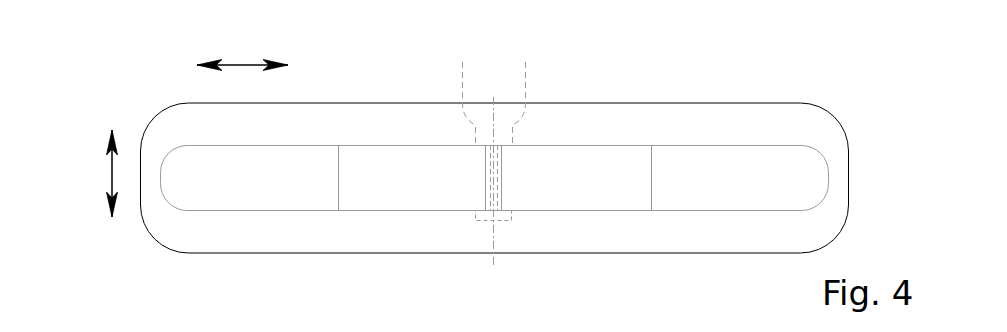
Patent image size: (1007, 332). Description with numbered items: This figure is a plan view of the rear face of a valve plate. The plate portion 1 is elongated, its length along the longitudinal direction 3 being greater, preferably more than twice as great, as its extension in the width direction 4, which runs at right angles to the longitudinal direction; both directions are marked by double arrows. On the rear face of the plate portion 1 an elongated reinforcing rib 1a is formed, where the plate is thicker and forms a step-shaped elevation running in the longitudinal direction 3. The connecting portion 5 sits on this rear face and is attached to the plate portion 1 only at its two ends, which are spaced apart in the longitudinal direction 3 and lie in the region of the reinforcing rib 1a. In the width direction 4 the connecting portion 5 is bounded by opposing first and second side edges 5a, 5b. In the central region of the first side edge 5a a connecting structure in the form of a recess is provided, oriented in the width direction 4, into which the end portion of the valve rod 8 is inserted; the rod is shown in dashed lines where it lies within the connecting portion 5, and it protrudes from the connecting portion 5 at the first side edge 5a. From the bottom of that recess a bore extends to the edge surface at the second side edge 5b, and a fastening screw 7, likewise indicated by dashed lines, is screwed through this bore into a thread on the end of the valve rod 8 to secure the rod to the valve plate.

The plate portion 1 is at (748, 92).
The reinforcing rib 1a is at (679, 198).
The longitudinal direction 3 is at (245, 62).
The width direction 4 is at (110, 176).
The connecting portion 5 is at (564, 222).
The first side edge 5a is at (355, 125).
The second side edge 5b is at (376, 211).
The fastening screw 7 is at (484, 219).
The valve rod 8 is at (514, 79).